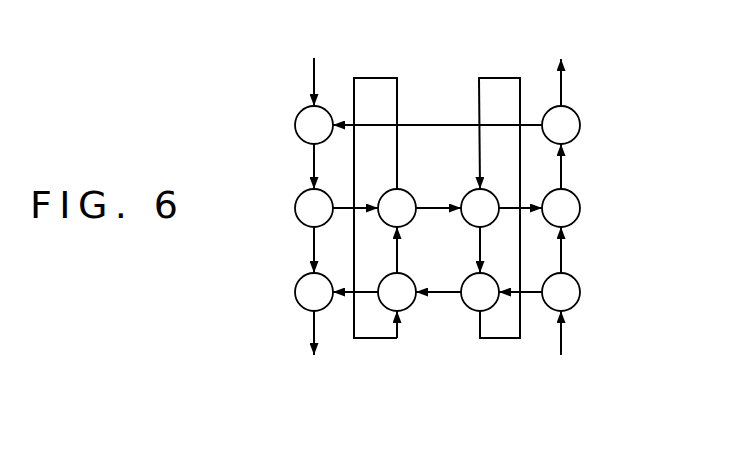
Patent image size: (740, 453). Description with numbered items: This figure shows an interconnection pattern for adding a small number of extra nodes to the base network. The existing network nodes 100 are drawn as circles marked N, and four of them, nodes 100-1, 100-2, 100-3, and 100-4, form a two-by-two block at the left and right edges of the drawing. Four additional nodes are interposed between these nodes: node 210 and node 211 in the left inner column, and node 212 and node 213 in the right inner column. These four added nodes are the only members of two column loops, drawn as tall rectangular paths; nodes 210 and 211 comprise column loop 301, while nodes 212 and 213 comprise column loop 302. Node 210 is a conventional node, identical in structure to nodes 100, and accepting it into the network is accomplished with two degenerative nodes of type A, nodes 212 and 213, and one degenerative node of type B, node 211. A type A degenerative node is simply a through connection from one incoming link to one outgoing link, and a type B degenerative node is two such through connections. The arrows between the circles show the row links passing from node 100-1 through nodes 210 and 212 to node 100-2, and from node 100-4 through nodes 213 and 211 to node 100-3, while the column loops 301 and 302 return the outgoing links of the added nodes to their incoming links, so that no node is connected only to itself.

The node 100 is at (295, 126).
The node 100-1 is at (294, 209).
The node 100-2 is at (580, 209).
The node 100-3 is at (294, 293).
The node 100-4 is at (580, 293).
The conventional node 210 is at (407, 189).
The type B degenerative node 211 is at (405, 313).
The type A degenerative node 212 is at (461, 225).
The type A degenerative node 213 is at (464, 308).
The column loop 301 is at (374, 78).
The column loop 302 is at (501, 78).